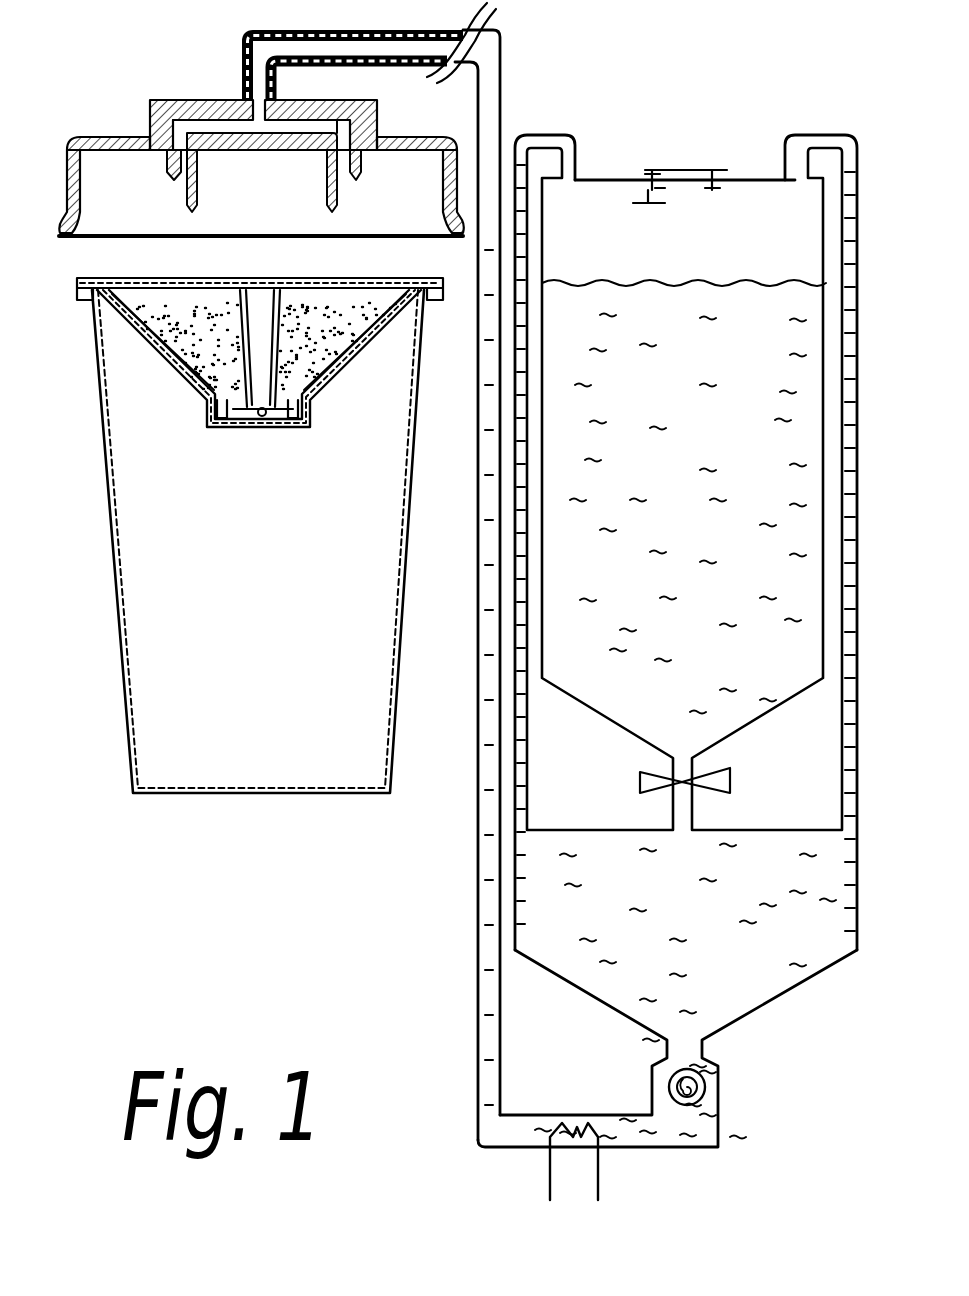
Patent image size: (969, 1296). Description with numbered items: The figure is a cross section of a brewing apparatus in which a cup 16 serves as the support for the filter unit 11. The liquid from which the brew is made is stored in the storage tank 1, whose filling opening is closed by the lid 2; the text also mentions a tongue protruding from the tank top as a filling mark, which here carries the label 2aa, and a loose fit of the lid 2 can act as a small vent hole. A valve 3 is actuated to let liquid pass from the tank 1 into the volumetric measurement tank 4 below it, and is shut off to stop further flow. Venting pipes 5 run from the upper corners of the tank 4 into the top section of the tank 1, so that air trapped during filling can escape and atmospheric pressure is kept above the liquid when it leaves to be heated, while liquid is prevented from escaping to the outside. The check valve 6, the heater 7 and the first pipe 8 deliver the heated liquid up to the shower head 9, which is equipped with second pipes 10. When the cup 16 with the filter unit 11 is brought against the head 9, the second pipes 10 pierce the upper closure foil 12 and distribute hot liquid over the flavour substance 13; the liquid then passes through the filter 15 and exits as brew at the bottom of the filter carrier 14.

The storage tank 1 is at (796, 206).
The lid 2 is at (683, 170).
The temperature sensor 2aa is at (646, 200).
The valve 3 is at (713, 783).
The volumetric measurement tank 4 is at (821, 903).
The venting pipes 5 is at (797, 140).
The check valve 6 is at (688, 1088).
The heater 7 is at (582, 1148).
The first pipe 8 is at (480, 600).
The shower head 9 is at (157, 108).
The second pipes 10 is at (355, 176).
The filter unit 11 is at (338, 292).
The closure foil 12 is at (143, 282).
The flavour substance 13 is at (166, 318).
The filter carrier 14 is at (183, 372).
The filter 15 is at (330, 363).
The cup 16 is at (160, 688).